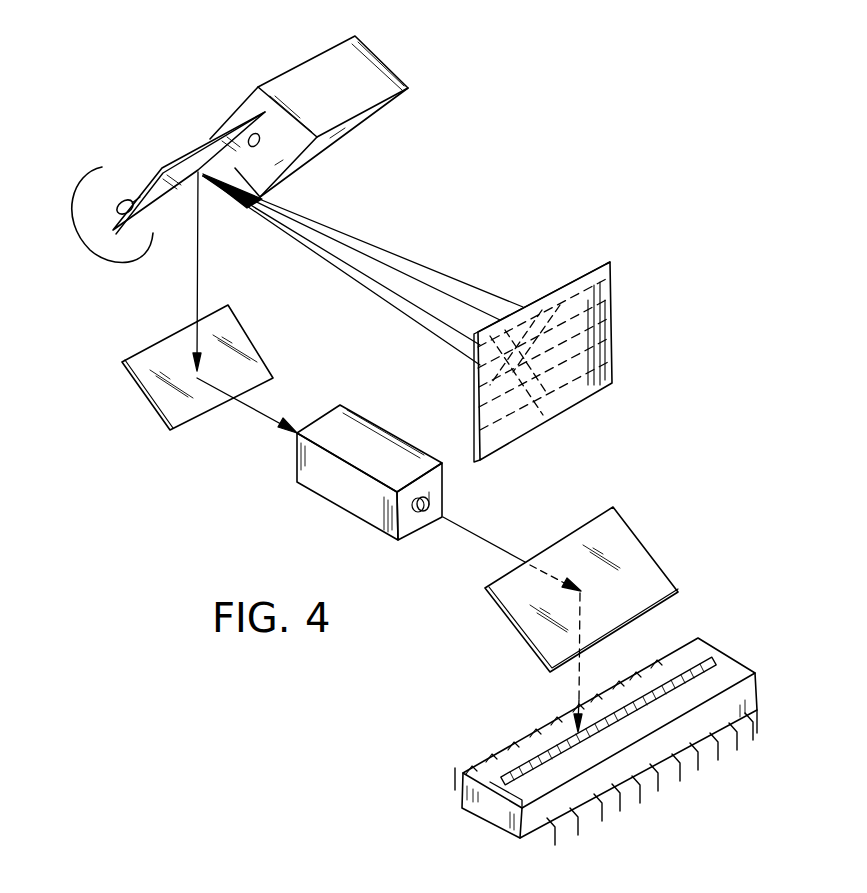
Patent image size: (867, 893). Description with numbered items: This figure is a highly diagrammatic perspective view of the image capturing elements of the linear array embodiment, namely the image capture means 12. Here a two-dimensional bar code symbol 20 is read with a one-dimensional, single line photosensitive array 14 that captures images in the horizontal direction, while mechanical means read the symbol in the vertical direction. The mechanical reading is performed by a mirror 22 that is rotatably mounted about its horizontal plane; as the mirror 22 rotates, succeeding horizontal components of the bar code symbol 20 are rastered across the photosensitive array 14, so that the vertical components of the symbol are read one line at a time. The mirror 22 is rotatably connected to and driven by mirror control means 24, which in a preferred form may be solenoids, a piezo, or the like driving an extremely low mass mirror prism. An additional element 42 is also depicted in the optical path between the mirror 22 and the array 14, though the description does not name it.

The image capture means 12 is at (460, 148).
The one-dimensional photosensitive array 14 is at (718, 682).
The two-dimensional bar code symbol 20 is at (593, 355).
The mirror 22 is at (185, 152).
The mirror control means 24 is at (323, 153).
The optical module 42 is at (352, 490).